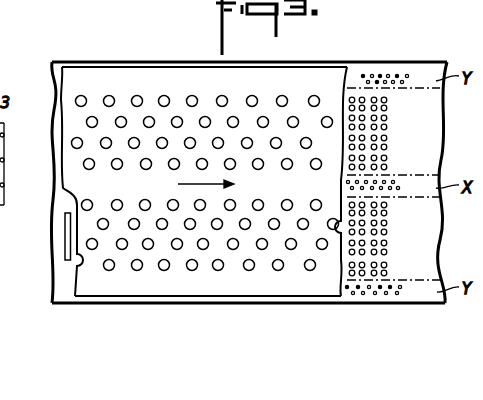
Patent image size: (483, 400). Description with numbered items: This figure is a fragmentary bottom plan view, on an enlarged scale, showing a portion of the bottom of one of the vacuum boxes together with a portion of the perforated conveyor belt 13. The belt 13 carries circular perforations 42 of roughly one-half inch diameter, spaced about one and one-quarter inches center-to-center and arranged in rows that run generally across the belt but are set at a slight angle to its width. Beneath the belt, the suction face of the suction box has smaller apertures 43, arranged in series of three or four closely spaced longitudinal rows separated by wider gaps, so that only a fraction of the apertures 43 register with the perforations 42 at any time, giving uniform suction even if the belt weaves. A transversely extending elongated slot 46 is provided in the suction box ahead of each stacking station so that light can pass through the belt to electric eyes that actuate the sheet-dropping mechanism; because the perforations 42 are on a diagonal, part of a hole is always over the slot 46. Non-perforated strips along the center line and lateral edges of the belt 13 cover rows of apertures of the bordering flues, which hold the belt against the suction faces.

The perforated suction belt 13 is at (172, 80).
The perforations 42 is at (86, 99).
The apertures 43 is at (385, 139).
The elongated slots 46 is at (66, 237).